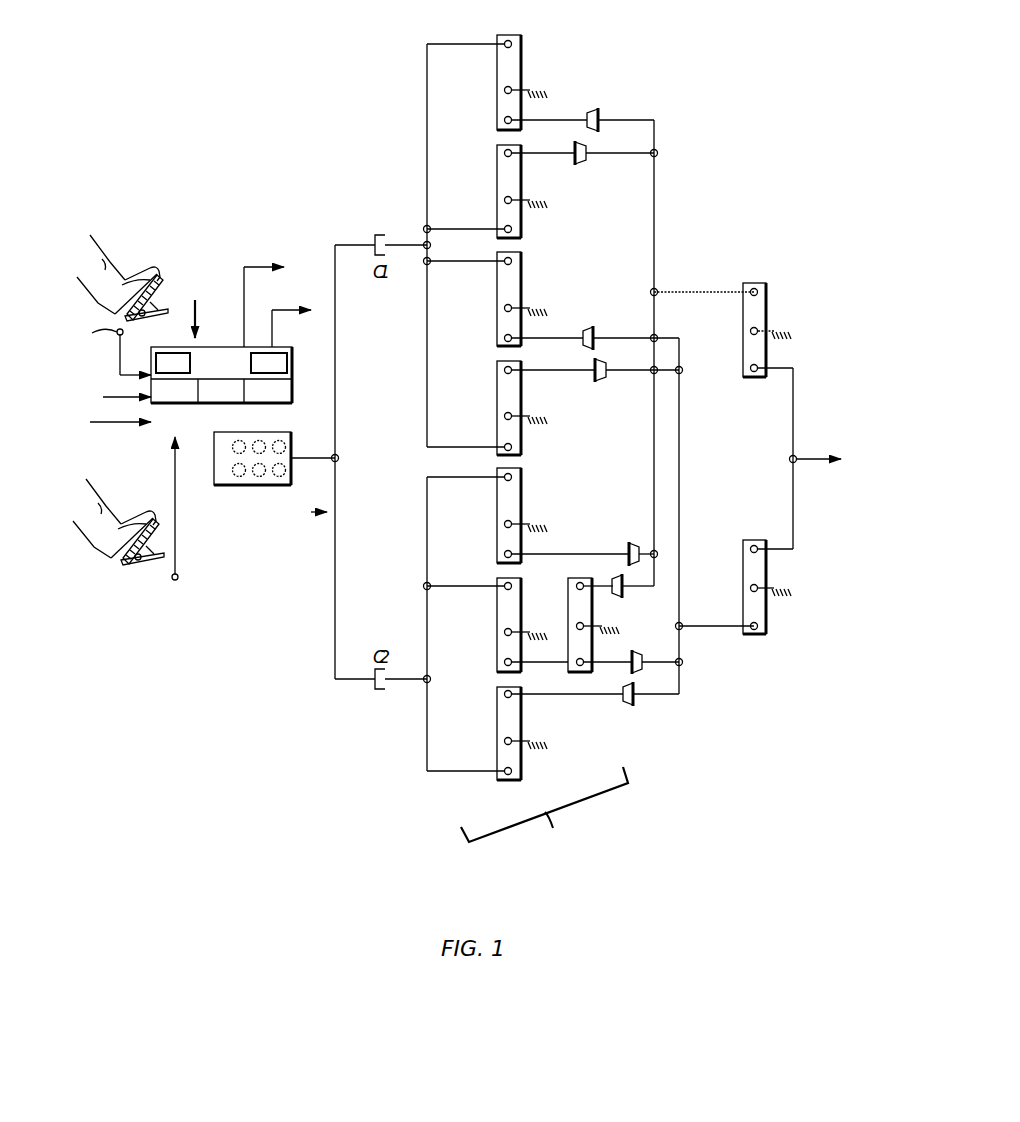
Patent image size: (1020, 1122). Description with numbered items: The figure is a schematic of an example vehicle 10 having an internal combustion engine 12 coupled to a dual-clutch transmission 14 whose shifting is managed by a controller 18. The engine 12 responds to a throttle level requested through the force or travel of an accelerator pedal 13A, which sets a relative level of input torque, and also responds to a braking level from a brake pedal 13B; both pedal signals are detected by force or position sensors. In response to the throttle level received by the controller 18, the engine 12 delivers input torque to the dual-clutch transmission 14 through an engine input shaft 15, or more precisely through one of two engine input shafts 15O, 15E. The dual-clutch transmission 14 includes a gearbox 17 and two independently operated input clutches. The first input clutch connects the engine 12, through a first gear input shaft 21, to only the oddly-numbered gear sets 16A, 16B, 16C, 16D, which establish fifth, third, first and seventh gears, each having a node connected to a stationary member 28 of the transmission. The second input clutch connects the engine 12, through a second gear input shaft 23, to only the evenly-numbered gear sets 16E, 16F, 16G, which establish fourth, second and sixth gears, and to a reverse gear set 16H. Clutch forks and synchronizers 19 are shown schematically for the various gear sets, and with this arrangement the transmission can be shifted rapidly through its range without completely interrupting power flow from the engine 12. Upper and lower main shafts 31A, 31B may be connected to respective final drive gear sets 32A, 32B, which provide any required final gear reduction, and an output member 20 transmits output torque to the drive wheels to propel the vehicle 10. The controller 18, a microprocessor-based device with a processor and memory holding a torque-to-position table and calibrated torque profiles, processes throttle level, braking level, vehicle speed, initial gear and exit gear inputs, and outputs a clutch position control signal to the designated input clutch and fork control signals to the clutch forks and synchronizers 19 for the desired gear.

The vehicle 10 is at (721, 45).
The internal combustion engine 12 is at (243, 490).
The accelerator pedal 13A is at (152, 275).
The brake pedal 13B is at (148, 520).
The dual-clutch transmission 14 is at (565, 67).
The engine input shaft 15 is at (312, 456).
The engine input shaft 15O is at (336, 352).
The engine input shaft 15E is at (336, 572).
The oddly-numbered gear set 16A is at (497, 85).
The oddly-numbered gear set 16B is at (497, 192).
The oddly-numbered gear set 16C is at (497, 300).
The oddly-numbered gear set 16D is at (497, 408).
The evenly-numbered gear set 16E is at (497, 516).
The evenly-numbered gear set 16F is at (497, 624).
The evenly-numbered gear set 16G is at (497, 733).
The reverse gear set 16H is at (568, 610).
The gearbox 17 is at (544, 806).
The controller 18 is at (293, 362).
The clutch forks and synchronizers 19 is at (617, 85).
The output member 20 is at (813, 457).
The first gear input shaft 21 is at (393, 121).
The second gear input shaft 23 is at (393, 723).
The stationary member 28 is at (543, 92).
The upper main shaft 31A is at (700, 288).
The lower main shaft 31B is at (718, 630).
The final drive gear set 32A is at (768, 299).
The final drive gear set 32B is at (768, 620).